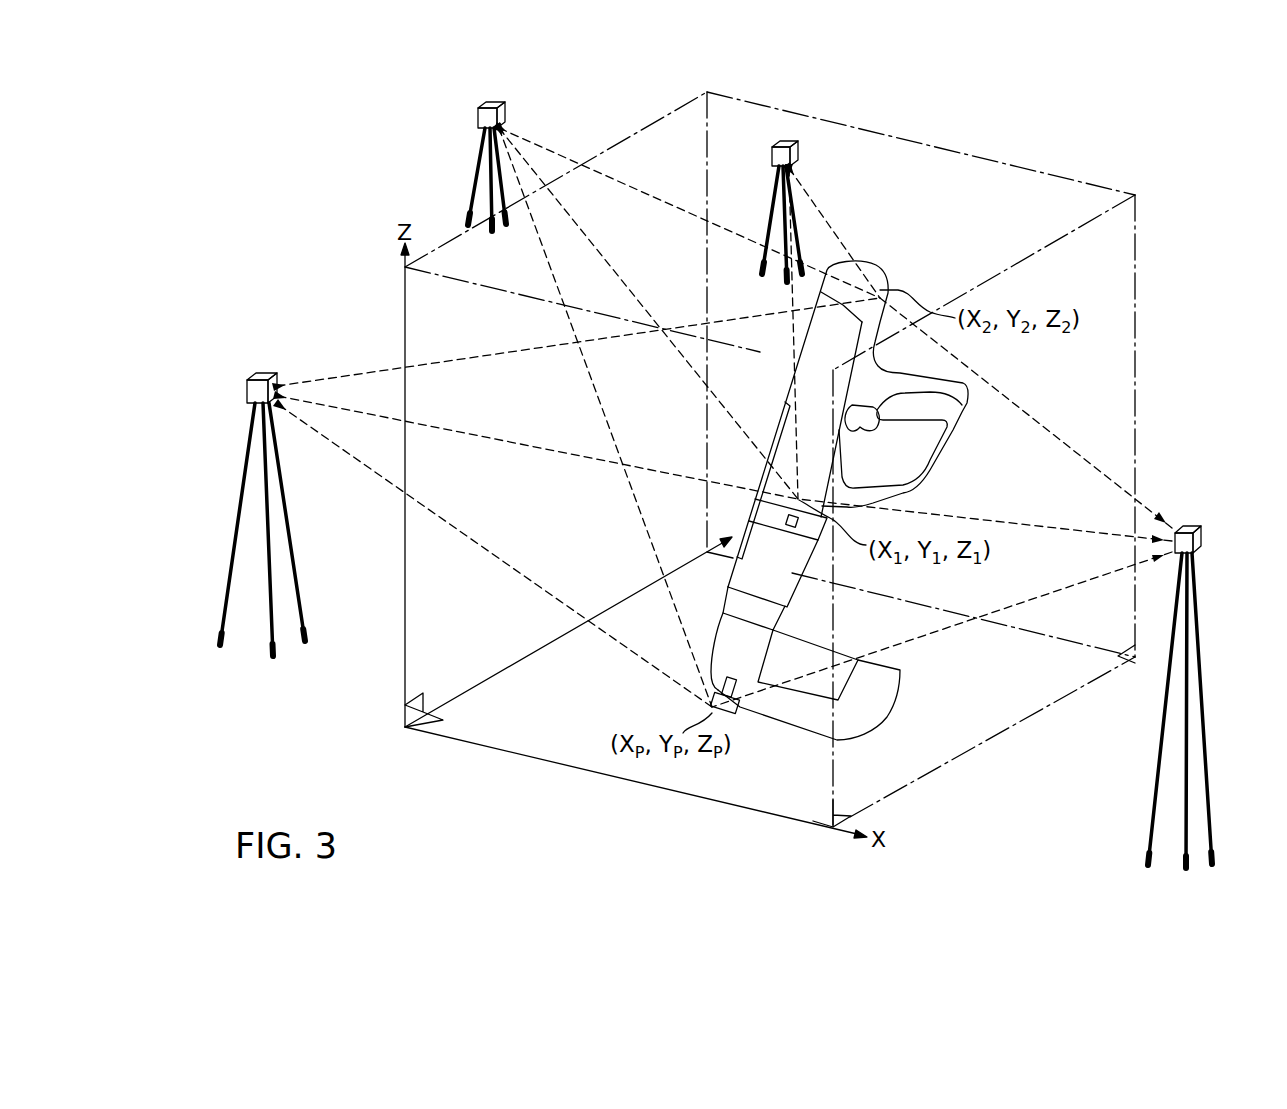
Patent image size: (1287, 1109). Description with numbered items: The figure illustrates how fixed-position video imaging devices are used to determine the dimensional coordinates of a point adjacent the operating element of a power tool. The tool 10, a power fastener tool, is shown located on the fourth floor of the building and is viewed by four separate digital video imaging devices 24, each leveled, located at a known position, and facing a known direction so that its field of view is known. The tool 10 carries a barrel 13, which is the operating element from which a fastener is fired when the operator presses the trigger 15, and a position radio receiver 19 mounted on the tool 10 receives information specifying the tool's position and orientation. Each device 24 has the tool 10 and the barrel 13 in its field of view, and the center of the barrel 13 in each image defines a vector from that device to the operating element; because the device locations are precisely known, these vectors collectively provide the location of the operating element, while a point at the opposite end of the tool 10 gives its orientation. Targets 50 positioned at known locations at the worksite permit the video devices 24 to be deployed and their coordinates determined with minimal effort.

The tool 10 is at (953, 412).
The barrel 13 is at (738, 710).
The trigger 15 is at (862, 437).
The position radio receiver 19 is at (793, 513).
The digital video imaging devices 24 is at (478, 116).
The targets 50 is at (823, 820).